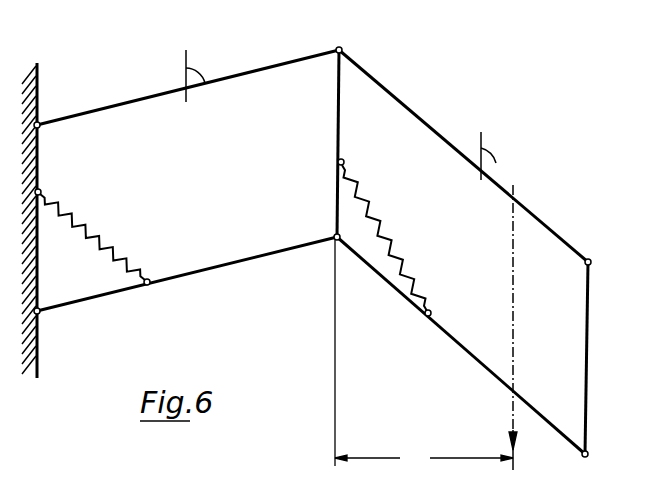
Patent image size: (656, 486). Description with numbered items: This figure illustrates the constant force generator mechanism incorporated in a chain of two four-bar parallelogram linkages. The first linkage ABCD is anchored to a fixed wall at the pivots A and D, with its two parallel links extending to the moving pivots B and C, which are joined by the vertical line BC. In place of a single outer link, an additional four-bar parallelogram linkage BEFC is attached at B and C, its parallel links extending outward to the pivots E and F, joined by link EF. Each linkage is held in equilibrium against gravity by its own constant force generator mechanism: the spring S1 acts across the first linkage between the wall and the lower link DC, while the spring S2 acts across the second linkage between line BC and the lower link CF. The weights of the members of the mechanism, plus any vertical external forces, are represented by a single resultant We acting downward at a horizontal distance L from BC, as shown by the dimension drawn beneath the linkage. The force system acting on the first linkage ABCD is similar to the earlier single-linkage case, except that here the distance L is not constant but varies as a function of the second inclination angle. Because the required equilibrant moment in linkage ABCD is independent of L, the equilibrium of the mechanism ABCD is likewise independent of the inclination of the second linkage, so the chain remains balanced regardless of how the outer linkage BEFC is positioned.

The pivot A is at (44, 112).
The pivot B is at (336, 38).
The pivot C is at (329, 251).
The pivot D is at (42, 322).
The pivot E is at (595, 262).
The pivot F is at (592, 460).
The constant force generator spring S1 is at (92, 237).
The constant force generator spring S2 is at (384, 237).
The distance L is at (424, 354).
The resultant load We is at (528, 327).